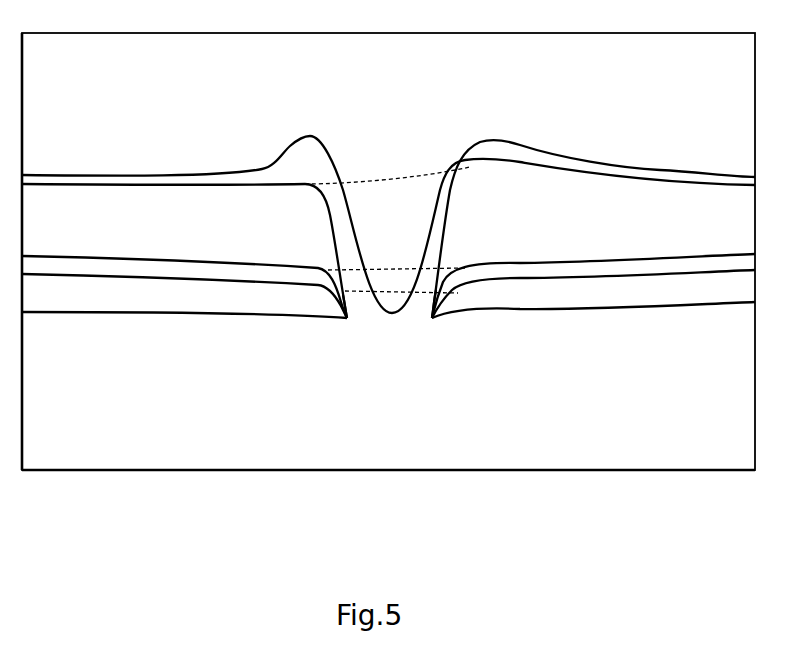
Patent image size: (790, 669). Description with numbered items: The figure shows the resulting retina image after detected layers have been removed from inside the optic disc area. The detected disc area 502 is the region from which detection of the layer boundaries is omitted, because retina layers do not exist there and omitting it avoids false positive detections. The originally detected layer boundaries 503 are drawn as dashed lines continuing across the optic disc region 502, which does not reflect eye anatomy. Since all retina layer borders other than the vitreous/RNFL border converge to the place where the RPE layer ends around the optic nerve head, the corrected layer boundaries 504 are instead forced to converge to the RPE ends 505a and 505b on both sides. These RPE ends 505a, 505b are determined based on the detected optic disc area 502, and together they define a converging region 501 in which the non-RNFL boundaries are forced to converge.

The converging region 501 is at (299, 55).
The detected disc area 502 is at (335, 67).
The originally detected layer boundaries 503 is at (393, 263).
The corrected layer boundaries 504 is at (418, 326).
The RPE end 505a is at (340, 326).
The RPE end 505b is at (441, 330).